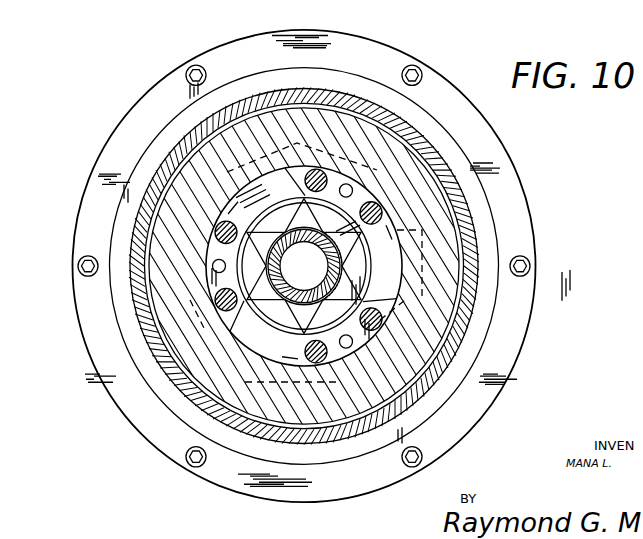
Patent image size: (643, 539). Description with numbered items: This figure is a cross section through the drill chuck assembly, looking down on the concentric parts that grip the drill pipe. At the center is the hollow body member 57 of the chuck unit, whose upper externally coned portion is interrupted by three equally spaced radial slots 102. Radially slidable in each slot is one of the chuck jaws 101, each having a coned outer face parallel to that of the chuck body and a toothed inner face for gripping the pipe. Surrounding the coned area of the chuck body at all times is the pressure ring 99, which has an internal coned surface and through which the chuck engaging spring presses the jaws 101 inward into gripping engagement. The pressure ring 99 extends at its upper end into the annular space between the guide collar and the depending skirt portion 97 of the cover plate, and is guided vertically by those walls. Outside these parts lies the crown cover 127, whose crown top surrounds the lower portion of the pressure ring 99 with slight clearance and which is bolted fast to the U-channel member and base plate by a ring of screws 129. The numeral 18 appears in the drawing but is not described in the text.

The shaft 18 is at (326, 250).
The hub plate 57 is at (363, 347).
The bearing ring 97 is at (477, 308).
The resilient annular member 99 is at (190, 145).
The lugs 101 is at (318, 152).
The flexible plate 102 is at (288, 357).
The housing cover 127 is at (530, 209).
The bolts 129 is at (79, 268).